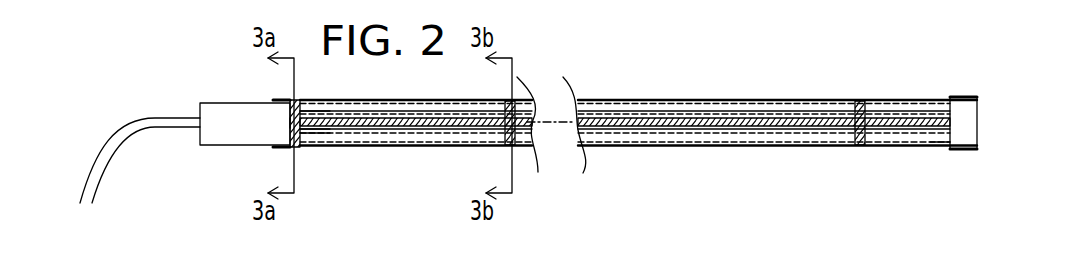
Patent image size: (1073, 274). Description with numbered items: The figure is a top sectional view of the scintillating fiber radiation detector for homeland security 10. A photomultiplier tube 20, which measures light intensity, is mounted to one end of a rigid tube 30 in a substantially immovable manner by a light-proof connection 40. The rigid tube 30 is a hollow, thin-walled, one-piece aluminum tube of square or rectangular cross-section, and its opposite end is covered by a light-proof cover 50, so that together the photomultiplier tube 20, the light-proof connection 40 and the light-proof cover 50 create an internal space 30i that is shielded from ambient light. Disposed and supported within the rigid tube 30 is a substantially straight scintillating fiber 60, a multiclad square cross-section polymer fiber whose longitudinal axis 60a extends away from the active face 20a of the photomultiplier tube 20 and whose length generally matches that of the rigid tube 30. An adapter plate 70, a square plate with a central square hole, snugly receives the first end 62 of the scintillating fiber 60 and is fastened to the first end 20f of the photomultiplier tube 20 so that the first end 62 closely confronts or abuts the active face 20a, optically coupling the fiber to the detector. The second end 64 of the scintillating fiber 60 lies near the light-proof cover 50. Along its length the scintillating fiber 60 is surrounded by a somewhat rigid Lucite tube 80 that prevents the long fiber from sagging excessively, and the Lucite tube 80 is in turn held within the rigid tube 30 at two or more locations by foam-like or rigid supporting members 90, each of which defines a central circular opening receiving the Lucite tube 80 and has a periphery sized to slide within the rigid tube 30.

The scintillating fiber radiation detector for homeland security 10 is at (659, 181).
The photomultiplier tube 20 is at (240, 121).
The active face of the PMT 20a is at (290, 122).
The first end of the PMT 20f is at (290, 112).
The rigid tube 30 is at (665, 99).
The internal space 30i is at (780, 140).
The light-proof connection 40 is at (298, 148).
The light-proof cover 50 is at (978, 126).
The scintillating fiber 60 is at (767, 118).
The longitudinal axis of the scintillating fiber 60a is at (562, 142).
The first end of the scintillating fiber 62 is at (310, 100).
The second end of the scintillating fiber 64 is at (958, 128).
The adapter plate 70 is at (305, 142).
The Lucite tube 80 is at (458, 136).
The supporting members 90 is at (502, 108).